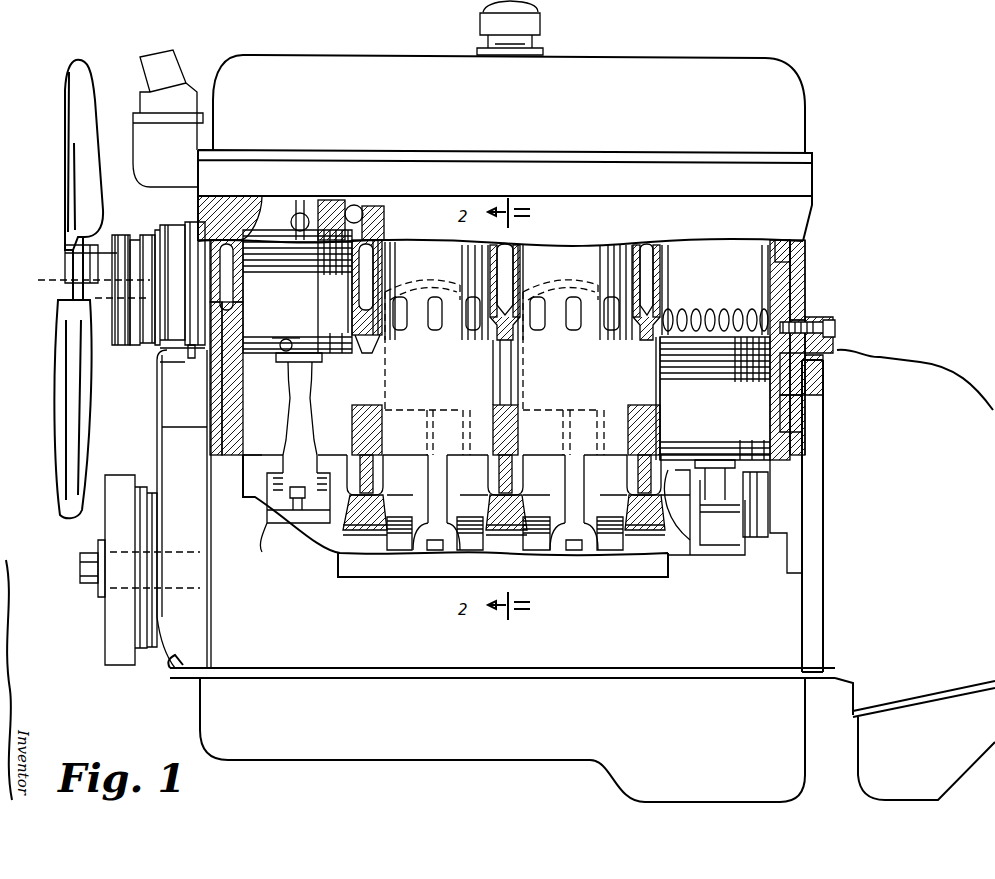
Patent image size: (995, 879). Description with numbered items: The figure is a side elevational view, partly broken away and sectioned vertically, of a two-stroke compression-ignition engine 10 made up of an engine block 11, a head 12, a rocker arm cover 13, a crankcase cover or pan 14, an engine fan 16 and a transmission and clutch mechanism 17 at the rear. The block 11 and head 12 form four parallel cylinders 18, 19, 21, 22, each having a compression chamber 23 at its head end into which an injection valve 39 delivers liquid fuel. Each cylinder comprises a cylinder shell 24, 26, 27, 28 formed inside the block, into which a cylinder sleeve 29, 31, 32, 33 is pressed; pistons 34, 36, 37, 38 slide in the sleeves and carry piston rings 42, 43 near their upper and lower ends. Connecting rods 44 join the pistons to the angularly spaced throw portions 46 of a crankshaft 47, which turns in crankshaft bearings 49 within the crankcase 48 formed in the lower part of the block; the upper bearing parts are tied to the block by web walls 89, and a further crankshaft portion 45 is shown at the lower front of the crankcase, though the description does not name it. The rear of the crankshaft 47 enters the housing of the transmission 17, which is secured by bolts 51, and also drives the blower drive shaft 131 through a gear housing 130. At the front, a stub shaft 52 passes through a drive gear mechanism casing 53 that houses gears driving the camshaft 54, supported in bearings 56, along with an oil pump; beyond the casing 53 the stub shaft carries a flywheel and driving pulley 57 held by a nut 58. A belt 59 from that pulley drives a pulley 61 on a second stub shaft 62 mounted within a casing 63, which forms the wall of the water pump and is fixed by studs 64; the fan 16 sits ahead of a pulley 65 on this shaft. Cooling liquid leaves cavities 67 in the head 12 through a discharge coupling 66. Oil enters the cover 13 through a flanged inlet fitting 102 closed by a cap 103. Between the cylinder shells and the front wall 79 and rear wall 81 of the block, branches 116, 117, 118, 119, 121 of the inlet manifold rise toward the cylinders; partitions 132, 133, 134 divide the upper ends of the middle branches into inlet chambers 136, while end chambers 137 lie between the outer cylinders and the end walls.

The engine 10 is at (806, 278).
The engine block 11 is at (815, 304).
The head 12 is at (790, 170).
The rocker arm cover 13 is at (770, 106).
The crankcase cover or pan 14 is at (490, 750).
The engine fan 16 is at (82, 130).
The transmission and clutch mechanism 17 is at (930, 370).
The cylinder 18 is at (212, 445).
The cylinder 19 is at (390, 256).
The cylinder 21 is at (524, 283).
The cylinder 22 is at (670, 262).
The compression chamber 23 is at (332, 238).
The cylinder shell 24 is at (383, 252).
The cylinder shell 26 is at (508, 262).
The cylinder shell 27 is at (647, 254).
The cylinder shell 28 is at (782, 258).
The cylinder sleeve 29 is at (240, 395).
The cylinder sleeve 31 is at (418, 462).
The cylinder sleeve 32 is at (558, 462).
The cylinder sleeve 33 is at (660, 420).
The piston 34 is at (283, 347).
The piston 36 is at (410, 406).
The piston 37 is at (552, 410).
The piston 38 is at (715, 308).
The injection valve 39 is at (305, 214).
The piston ring 42 is at (276, 245).
The piston ring 43 is at (292, 362).
The connecting rod 44 is at (292, 425).
The crankshaft journal 45 is at (400, 545).
The throw portion 46 is at (275, 506).
The crankshaft 47 is at (468, 518).
The crankcase 48 is at (610, 500).
The crankshaft bearing 49 is at (646, 532).
The bolt 51 is at (836, 328).
The stub shaft 52 is at (90, 558).
The drive gear mechanism casing 53 is at (182, 657).
The camshaft 54 is at (272, 464).
The bearing 56 is at (276, 470).
The flywheel and driving pulley 57 is at (118, 628).
The nut 58 is at (88, 584).
The belt 59 is at (150, 516).
The pulley 61 is at (147, 245).
The stub shaft 62 is at (82, 271).
The casing 63 is at (178, 240).
The stud 64 is at (183, 350).
The pulley 65 is at (115, 235).
The discharge coupling 66 is at (158, 103).
The cooling liquid circulating cavity 67 is at (254, 210).
The front wall 79 is at (200, 262).
The rear wall 81 is at (790, 426).
The web wall 89 is at (670, 500).
The flanged inlet fitting 102 is at (520, 43).
The cap or cover 103 is at (492, 25).
The branch 116 is at (320, 382).
The branch 117 is at (506, 378).
The branch 118 is at (660, 391).
The branch 119 is at (233, 380).
The branch 121 is at (790, 400).
The gear housing 130 is at (802, 520).
The drive shaft 131 is at (720, 530).
The partition 132 is at (325, 346).
The partition 133 is at (496, 332).
The partition 134 is at (640, 346).
The inlet chamber 136 is at (428, 340).
The inlet chamber 137 is at (236, 332).